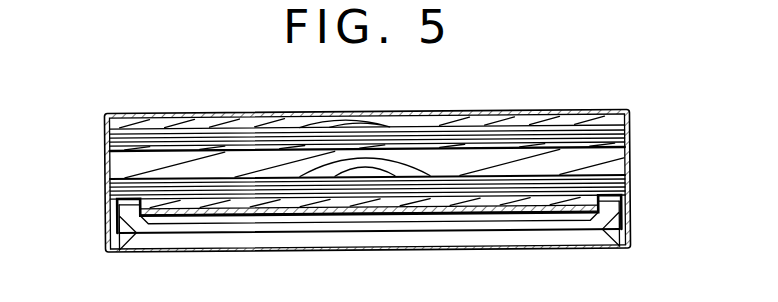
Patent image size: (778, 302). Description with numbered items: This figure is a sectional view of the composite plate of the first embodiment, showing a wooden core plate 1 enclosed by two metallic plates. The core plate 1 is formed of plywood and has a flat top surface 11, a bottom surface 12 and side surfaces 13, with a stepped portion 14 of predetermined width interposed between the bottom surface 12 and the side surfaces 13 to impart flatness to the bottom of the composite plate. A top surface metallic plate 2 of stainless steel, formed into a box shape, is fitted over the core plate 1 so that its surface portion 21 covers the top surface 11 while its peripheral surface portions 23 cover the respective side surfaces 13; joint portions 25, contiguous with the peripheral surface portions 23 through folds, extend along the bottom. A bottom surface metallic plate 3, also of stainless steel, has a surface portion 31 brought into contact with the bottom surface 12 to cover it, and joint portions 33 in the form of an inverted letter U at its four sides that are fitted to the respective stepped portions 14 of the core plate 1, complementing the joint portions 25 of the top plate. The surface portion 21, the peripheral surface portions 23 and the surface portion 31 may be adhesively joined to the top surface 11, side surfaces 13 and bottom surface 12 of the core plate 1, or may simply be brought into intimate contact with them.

The core plate 1 is at (183, 128).
The top surface 11 is at (265, 117).
The top surface metallic plate 2 is at (398, 109).
The surface portion 21 is at (473, 111).
The bottom surface 12 is at (273, 213).
The side surfaces 13 is at (631, 129).
The peripheral surface portions 23 is at (631, 160).
The stepped portion 14 is at (631, 201).
The bottom surface metallic plate 3 is at (351, 218).
The surface portion 31 is at (425, 226).
The joint portions 25 is at (632, 238).
The joint portions 33 is at (124, 248).